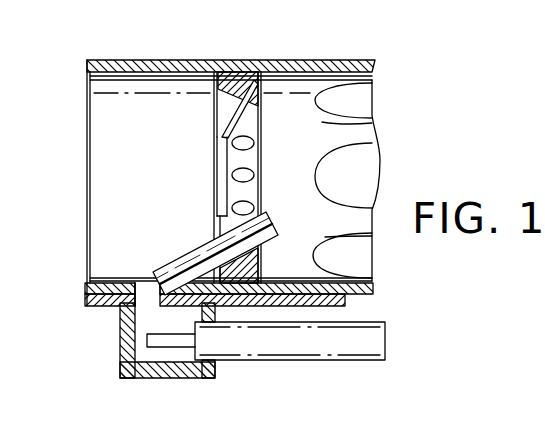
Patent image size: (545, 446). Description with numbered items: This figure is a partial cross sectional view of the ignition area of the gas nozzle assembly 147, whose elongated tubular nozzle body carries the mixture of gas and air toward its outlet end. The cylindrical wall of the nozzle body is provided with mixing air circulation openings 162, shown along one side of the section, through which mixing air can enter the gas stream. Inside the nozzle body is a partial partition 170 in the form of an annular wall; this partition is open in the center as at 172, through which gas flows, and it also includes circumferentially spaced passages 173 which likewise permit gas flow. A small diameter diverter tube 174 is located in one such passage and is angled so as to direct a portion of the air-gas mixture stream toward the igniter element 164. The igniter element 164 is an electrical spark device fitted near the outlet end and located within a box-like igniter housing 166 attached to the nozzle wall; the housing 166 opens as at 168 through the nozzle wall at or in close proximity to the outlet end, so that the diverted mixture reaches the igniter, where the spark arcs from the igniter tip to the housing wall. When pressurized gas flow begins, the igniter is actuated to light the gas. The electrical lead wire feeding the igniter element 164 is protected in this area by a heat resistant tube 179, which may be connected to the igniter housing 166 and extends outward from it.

The gas nozzle assembly 147 is at (313, 40).
The mixing air circulation openings 162 is at (359, 108).
The igniter element 164 is at (152, 346).
The igniter housing 166 is at (127, 340).
The housing opening 168 is at (148, 300).
The partial partition 170 is at (216, 129).
The central opening 172 is at (222, 162).
The circumferentially spaced passages 173 is at (216, 118).
The diverter tube 174 is at (190, 258).
The heat resistant tube 179 is at (385, 338).